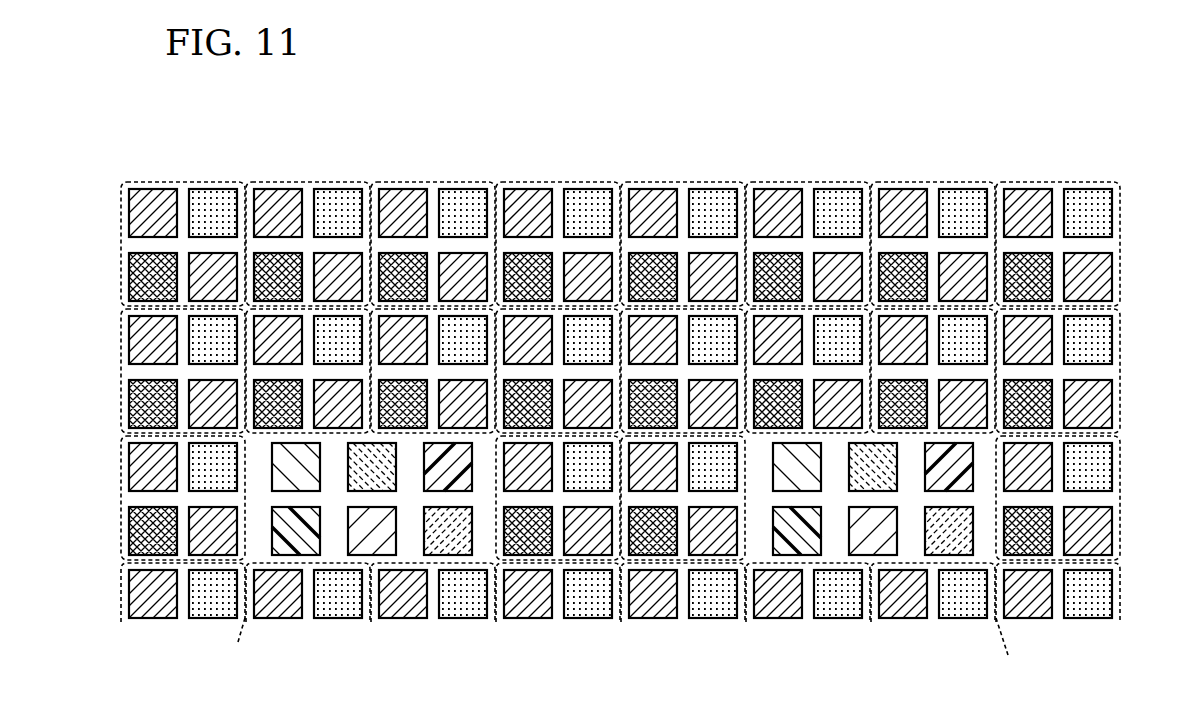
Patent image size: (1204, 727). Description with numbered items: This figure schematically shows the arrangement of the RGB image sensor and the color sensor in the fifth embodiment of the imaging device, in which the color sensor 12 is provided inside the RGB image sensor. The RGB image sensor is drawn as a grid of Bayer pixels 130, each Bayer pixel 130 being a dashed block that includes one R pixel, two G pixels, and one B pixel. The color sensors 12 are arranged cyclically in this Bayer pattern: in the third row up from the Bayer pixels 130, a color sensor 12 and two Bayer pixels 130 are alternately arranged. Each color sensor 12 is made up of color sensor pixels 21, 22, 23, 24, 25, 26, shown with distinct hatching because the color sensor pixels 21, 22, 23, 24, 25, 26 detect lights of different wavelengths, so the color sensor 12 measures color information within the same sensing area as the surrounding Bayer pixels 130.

The Bayer pixel 130 is at (307, 182).
The color sensor 12 is at (624, 649).
The color sensor pixel 21 is at (290, 468).
The color sensor pixel 22 is at (357, 470).
The color sensor pixel 23 is at (467, 470).
The color sensor pixel 24 is at (283, 530).
The color sensor pixel 25 is at (363, 536).
The color sensor pixel 26 is at (450, 537).